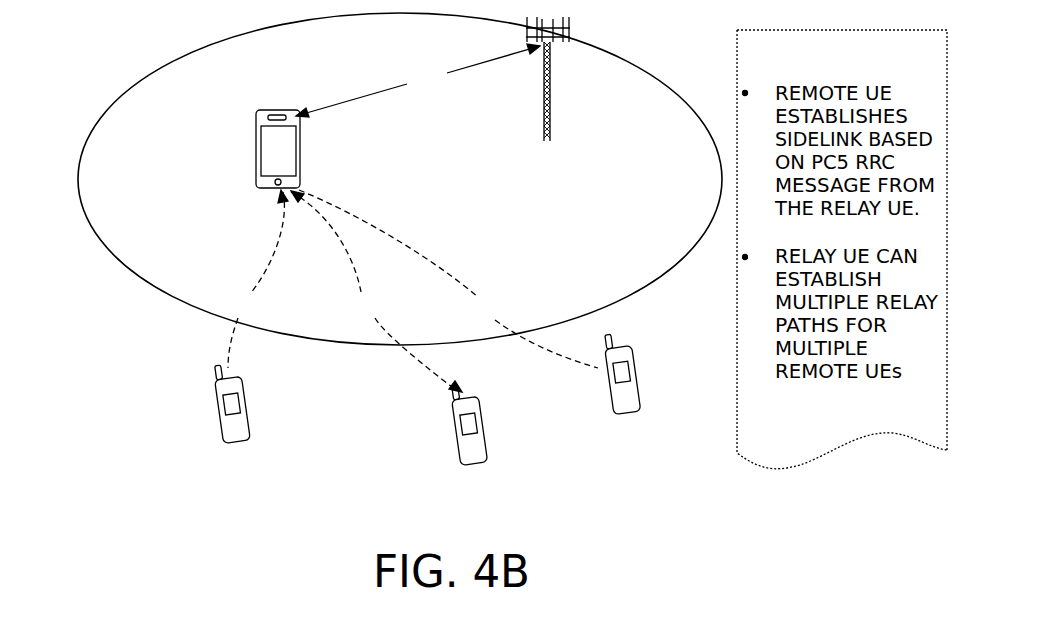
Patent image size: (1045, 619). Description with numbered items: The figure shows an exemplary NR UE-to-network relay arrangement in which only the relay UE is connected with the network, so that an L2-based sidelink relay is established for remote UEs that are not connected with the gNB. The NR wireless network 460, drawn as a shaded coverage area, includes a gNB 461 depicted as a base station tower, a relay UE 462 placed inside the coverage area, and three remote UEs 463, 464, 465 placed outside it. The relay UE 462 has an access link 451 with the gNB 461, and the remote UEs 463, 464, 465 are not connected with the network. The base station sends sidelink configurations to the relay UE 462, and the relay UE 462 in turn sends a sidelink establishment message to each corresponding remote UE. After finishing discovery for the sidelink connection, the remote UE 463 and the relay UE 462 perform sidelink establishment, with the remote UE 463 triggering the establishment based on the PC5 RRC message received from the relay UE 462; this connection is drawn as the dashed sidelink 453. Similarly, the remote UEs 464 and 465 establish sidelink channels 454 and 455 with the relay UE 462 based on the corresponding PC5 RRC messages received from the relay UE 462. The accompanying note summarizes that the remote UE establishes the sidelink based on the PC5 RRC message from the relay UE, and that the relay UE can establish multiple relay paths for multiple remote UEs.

The NR wireless network 460 is at (199, 48).
The gNB 461 is at (566, 27).
The relay UE 462 is at (256, 130).
The access link 451 is at (418, 80).
The sidelink 453 is at (258, 279).
The sidelink 454 is at (376, 291).
The sidelink 455 is at (448, 279).
The remote UE 463 is at (222, 397).
The remote UE 464 is at (459, 413).
The remote UE 465 is at (612, 370).